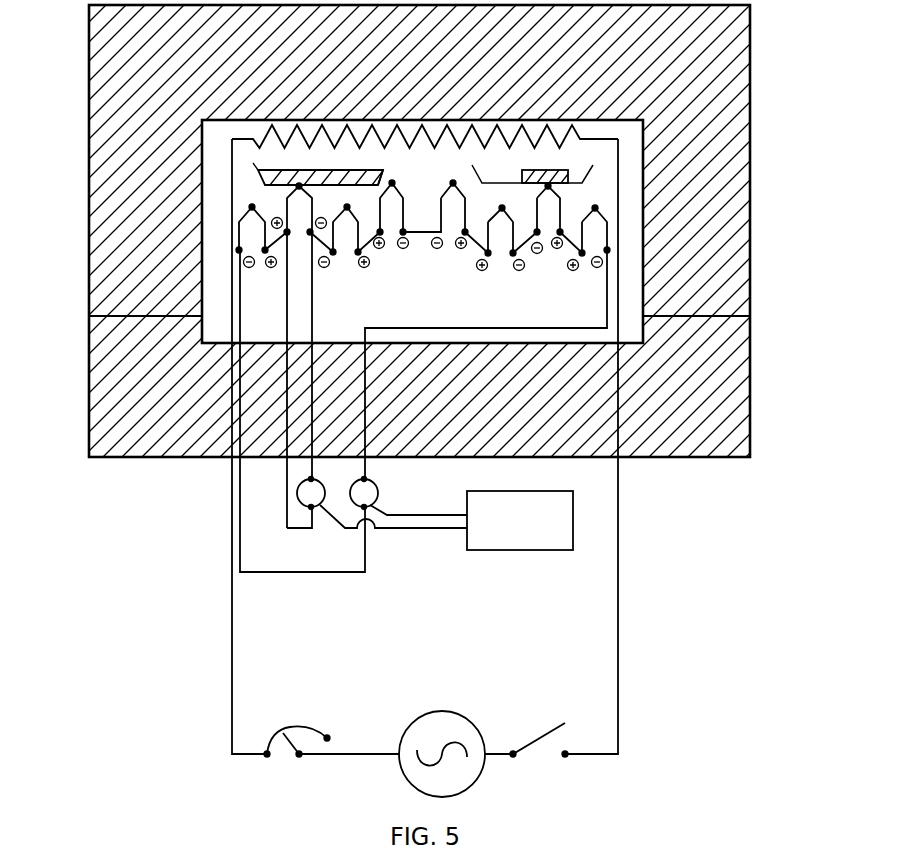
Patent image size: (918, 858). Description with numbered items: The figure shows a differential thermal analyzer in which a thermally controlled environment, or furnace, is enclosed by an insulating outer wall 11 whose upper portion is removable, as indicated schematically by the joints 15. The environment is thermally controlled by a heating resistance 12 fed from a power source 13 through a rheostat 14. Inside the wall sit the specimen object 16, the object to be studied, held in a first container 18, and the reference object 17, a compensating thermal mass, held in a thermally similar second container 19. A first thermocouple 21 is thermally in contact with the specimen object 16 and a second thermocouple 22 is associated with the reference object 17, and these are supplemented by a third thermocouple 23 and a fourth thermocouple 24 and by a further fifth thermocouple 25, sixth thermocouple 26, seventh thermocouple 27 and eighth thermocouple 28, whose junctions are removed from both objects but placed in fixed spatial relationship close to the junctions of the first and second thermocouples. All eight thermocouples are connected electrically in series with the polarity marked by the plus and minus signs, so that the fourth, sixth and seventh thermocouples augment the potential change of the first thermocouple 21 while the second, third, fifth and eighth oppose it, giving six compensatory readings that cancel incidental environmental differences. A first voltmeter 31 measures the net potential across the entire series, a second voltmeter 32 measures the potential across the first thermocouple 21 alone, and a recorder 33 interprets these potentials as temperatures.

The insulating outer wall 11 is at (757, 404).
The heating resistance 12 is at (425, 147).
The power source 13 is at (463, 717).
The rheostat 14 is at (306, 726).
The joints 15 is at (745, 312).
The specimen object 16 is at (295, 168).
The reference object 17 is at (548, 170).
The first container 18 is at (388, 172).
The second container 19 is at (584, 178).
The first thermocouple 21 is at (288, 210).
The second thermocouple 22 is at (542, 210).
The third thermocouple 23 is at (240, 212).
The fourth thermocouple 24 is at (595, 222).
The fifth thermocouple 25 is at (343, 223).
The sixth thermocouple 26 is at (503, 222).
The seventh thermocouple 27 is at (386, 203).
The eighth thermocouple 28 is at (450, 197).
The first voltmeter 31 is at (376, 485).
The second voltmeter 32 is at (318, 485).
The recorder 33 is at (527, 552).